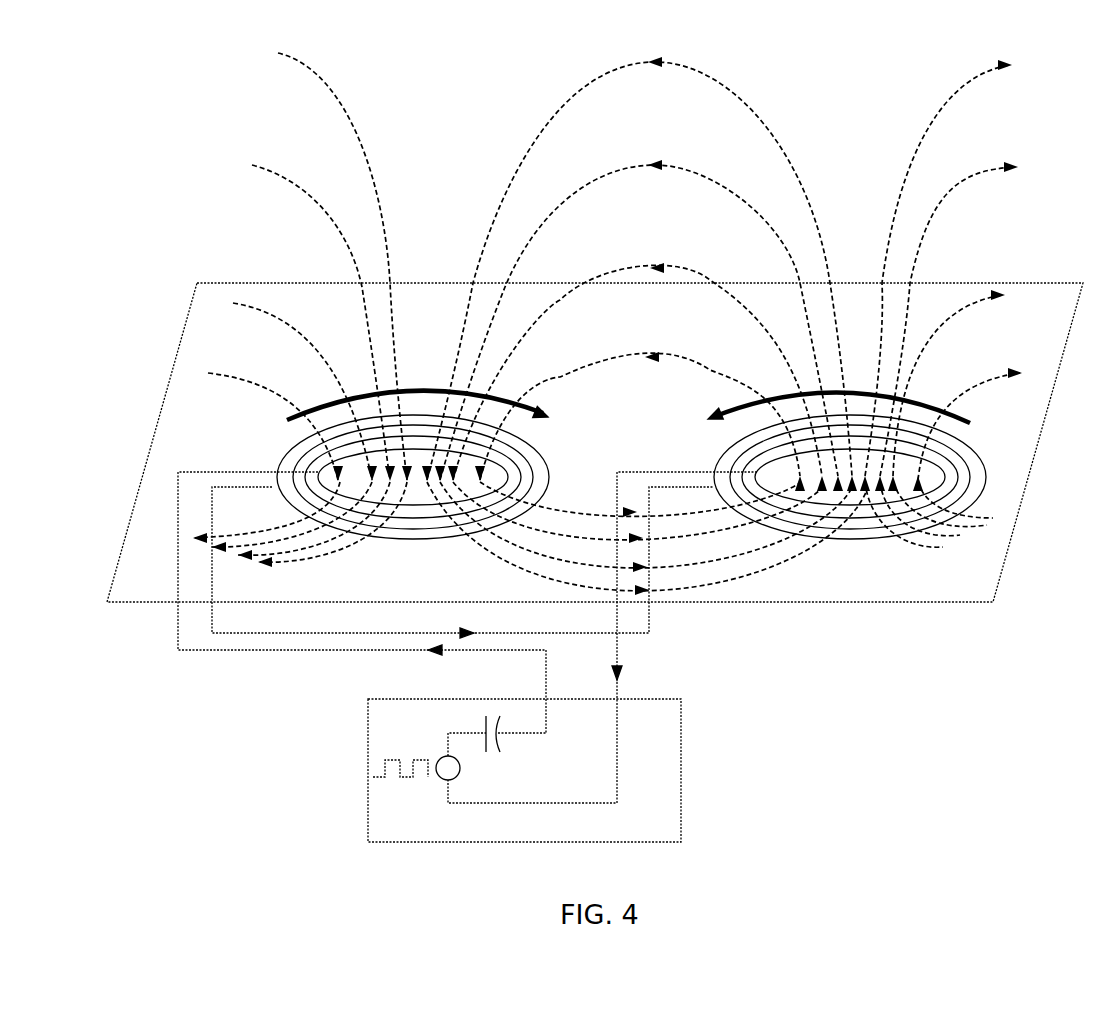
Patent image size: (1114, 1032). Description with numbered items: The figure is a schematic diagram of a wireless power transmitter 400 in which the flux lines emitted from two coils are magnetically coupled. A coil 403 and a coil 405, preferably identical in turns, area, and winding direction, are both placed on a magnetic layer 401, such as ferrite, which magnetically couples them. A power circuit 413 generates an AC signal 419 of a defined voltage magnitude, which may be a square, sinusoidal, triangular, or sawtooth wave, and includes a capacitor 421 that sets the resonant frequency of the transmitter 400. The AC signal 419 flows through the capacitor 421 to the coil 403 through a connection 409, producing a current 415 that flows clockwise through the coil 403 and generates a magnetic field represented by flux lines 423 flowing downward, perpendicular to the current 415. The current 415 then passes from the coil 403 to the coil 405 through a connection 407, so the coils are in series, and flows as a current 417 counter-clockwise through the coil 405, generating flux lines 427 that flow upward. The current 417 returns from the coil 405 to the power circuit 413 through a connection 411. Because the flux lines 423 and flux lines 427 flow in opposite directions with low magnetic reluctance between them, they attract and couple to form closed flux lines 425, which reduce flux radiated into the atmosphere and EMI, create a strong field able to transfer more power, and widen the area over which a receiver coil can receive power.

The wireless power transmitter 400 is at (146, 345).
The magnetic layer 401 is at (1067, 272).
The coil 403 is at (391, 539).
The coil 405 is at (842, 539).
The connection 407 is at (650, 620).
The connection 409 is at (347, 652).
The connection 411 is at (620, 658).
The power circuit 413 is at (561, 770).
The current 415 is at (547, 412).
The current 417 is at (710, 414).
The AC signal 419 is at (413, 792).
The capacitor 421 is at (495, 756).
The flux lines 423 is at (360, 98).
The closed flux lines 425 is at (760, 96).
The flux lines 427 is at (916, 98).